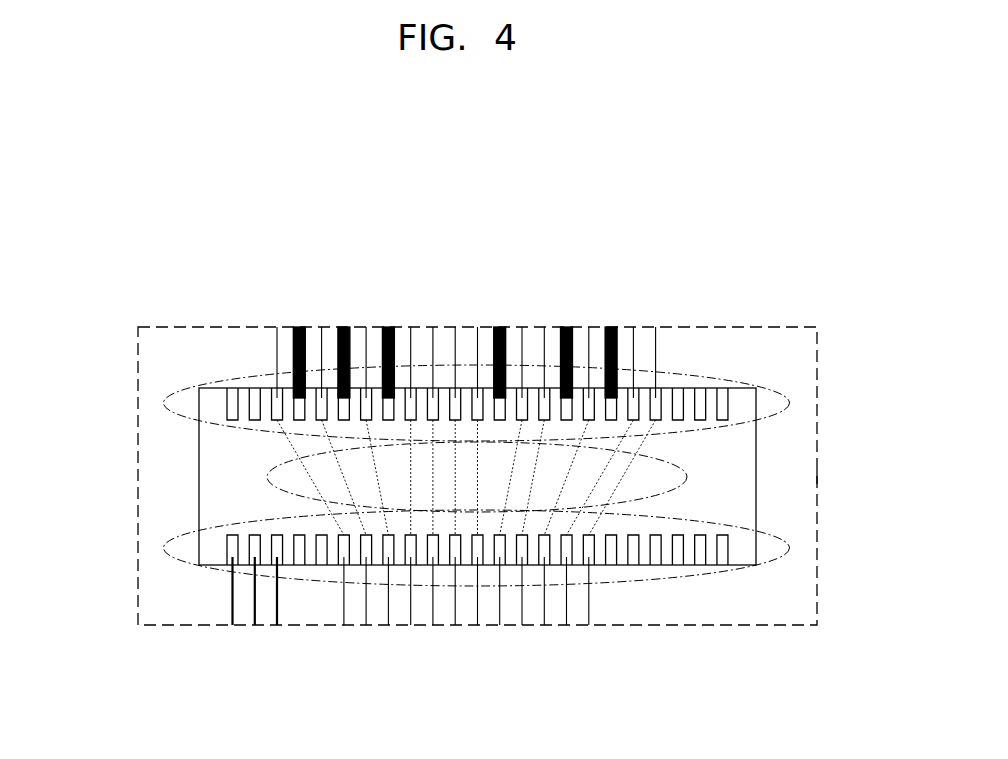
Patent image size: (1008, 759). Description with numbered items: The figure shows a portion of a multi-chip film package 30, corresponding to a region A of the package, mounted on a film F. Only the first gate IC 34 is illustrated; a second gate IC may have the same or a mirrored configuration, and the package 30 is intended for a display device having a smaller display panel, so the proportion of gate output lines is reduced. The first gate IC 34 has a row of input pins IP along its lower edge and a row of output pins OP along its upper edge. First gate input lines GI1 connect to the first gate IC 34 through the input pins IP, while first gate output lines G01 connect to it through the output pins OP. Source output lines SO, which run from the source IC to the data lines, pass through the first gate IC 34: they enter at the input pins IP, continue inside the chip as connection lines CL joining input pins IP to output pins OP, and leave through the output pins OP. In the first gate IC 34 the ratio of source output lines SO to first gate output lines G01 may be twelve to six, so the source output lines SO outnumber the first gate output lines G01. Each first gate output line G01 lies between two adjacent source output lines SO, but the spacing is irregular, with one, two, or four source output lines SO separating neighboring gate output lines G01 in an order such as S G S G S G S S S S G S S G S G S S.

The multi-chip film package 30 is at (780, 193).
The film F is at (790, 363).
The region A is at (817, 477).
The first gate IC 34 is at (199, 505).
The output pins OP is at (152, 403).
The input pins IP is at (150, 548).
The connection lines CL is at (254, 475).
The first gate output lines G01 is at (299, 327).
The source output lines SO is at (284, 326).
The first gate input lines GI1 is at (232, 588).